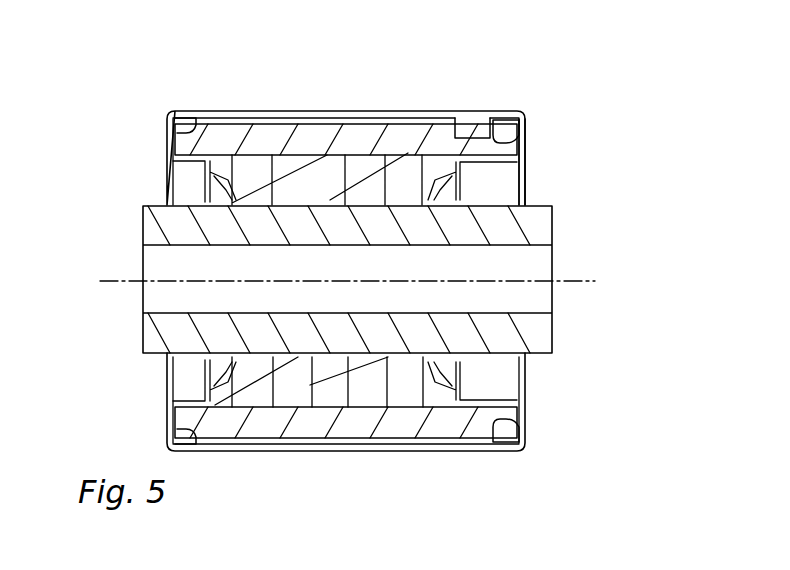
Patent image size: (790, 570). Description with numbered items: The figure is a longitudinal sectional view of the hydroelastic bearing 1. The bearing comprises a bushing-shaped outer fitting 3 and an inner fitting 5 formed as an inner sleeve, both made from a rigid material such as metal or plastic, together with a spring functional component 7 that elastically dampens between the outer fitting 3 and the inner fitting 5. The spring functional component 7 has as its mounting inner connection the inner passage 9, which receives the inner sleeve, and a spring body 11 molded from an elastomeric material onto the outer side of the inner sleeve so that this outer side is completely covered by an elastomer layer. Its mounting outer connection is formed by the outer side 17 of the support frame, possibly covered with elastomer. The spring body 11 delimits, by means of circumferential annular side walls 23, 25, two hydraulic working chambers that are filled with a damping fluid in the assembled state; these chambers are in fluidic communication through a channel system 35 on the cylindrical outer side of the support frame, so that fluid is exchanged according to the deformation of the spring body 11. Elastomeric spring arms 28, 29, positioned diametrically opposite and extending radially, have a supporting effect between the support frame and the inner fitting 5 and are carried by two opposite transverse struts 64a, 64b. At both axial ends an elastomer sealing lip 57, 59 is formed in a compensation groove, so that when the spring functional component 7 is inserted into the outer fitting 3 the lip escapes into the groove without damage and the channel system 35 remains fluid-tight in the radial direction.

The hydroelastic bearing 1 is at (410, 100).
The outer fitting 3 is at (432, 110).
The inner fitting 5 is at (305, 228).
The spring functional component 7 is at (543, 180).
The inner passage 9 is at (470, 210).
The spring body 11 is at (298, 383).
The outer side of the support frame 17 is at (275, 110).
The circumferential annular side wall 23 is at (230, 192).
The circumferential annular side wall 25 is at (400, 208).
The elastomeric spring arm 28 is at (368, 188).
The elastomeric spring arm 29 is at (390, 377).
The channel system 35 is at (482, 110).
The elastomer sealing lip 57 is at (520, 110).
The elastomer sealing lip 59 is at (167, 115).
The transverse strut 64a is at (230, 133).
The transverse strut 64b is at (326, 422).